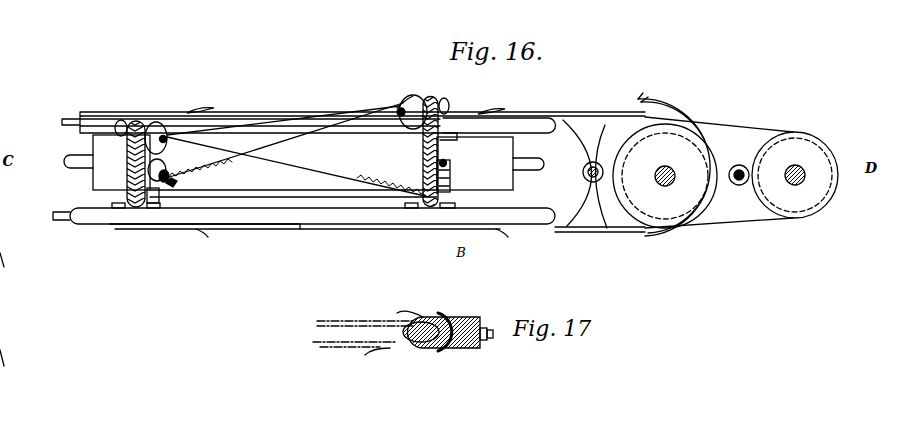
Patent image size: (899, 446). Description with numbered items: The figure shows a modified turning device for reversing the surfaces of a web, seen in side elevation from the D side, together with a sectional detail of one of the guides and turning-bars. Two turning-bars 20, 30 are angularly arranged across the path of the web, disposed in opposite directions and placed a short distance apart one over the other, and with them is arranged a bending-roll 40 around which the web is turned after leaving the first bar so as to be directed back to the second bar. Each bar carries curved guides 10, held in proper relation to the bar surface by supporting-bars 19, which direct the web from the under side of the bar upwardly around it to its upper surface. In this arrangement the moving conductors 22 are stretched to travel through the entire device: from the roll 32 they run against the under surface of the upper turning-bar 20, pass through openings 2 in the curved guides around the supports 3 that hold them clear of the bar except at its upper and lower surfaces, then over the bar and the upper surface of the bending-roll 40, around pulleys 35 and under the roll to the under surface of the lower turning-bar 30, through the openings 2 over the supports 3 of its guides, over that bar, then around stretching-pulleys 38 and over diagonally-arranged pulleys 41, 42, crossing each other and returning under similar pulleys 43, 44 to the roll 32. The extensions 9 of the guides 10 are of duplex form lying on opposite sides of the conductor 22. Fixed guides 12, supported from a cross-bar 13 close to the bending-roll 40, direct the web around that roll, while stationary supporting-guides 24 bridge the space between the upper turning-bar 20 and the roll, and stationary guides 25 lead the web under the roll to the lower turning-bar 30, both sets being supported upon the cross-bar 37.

In FIG. 17, the openings 2 is at (453, 349).
In FIG. 17, the supports 3 is at (440, 350).
In FIG. 16, the extensions 9 is at (352, 241).
In FIG. 17, the extensions 9 is at (394, 334).
In FIG. 16, the curved guides 10 is at (182, 115).
In FIG. 17, the curved guides 10 is at (455, 323).
In FIG. 16, the fixed guides 12 is at (690, 116).
In FIG. 16, the cross-bar 13 is at (740, 165).
In FIG. 16, the supporting-bars 19 is at (62, 122).
In FIG. 16, the upper turning-bar 20 is at (285, 114).
In FIG. 17, the upper turning-bar 20 is at (403, 332).
In FIG. 16, the moving conductors 22 is at (338, 113).
In FIG. 17, the moving conductors 22 is at (340, 321).
In FIG. 16, the stationary supporting-guides 24 is at (582, 173).
In FIG. 17, the stationary supporting-guides 24 is at (316, 322).
In FIG. 16, the stationary guides 25 is at (595, 176).
In FIG. 16, the lower turning-bar 30 is at (301, 225).
In FIG. 16, the roll 32 is at (293, 181).
In FIG. 16, the pulleys 35 is at (795, 175).
In FIG. 16, the cross-bar 37 is at (584, 170).
In FIG. 16, the stretching-pulleys 38 is at (127, 181).
In FIG. 16, the bending-roll 40 is at (665, 176).
In FIG. 16, the diagonally-arranged pulley 41 is at (165, 142).
In FIG. 16, the diagonally-arranged pulley 42 is at (403, 106).
In FIG. 16, the diagonally-arranged pulley 43 is at (452, 178).
In FIG. 16, the diagonally-arranged pulley 44 is at (173, 169).